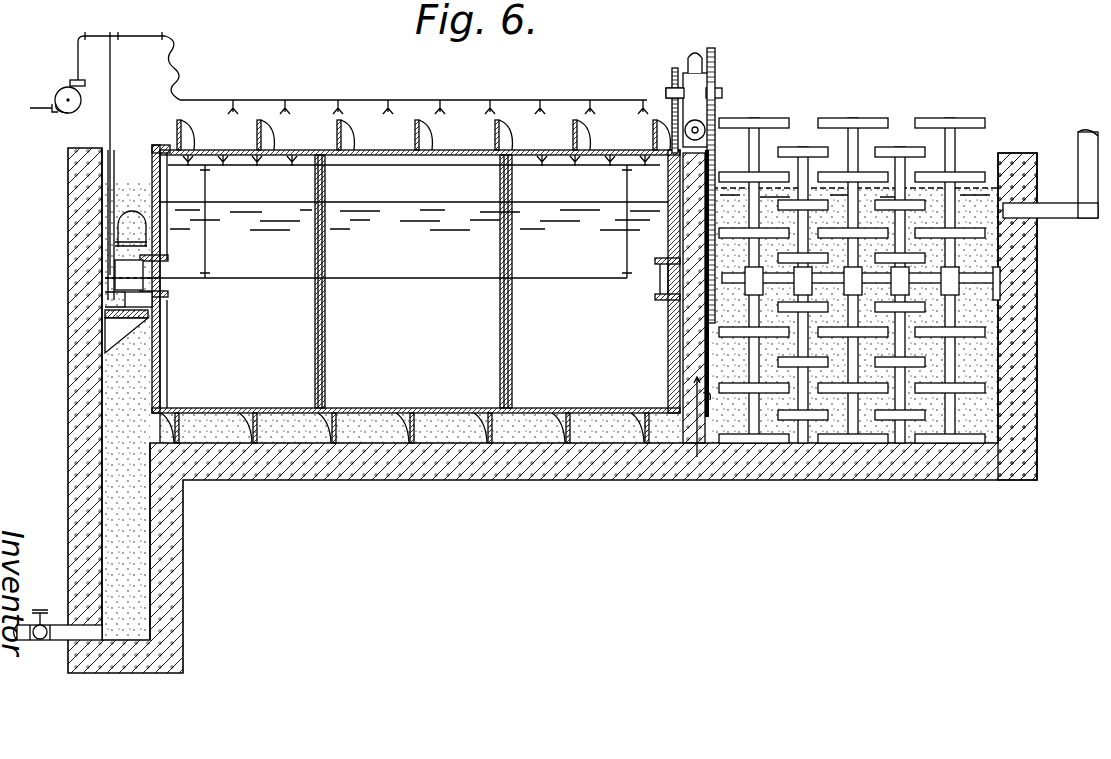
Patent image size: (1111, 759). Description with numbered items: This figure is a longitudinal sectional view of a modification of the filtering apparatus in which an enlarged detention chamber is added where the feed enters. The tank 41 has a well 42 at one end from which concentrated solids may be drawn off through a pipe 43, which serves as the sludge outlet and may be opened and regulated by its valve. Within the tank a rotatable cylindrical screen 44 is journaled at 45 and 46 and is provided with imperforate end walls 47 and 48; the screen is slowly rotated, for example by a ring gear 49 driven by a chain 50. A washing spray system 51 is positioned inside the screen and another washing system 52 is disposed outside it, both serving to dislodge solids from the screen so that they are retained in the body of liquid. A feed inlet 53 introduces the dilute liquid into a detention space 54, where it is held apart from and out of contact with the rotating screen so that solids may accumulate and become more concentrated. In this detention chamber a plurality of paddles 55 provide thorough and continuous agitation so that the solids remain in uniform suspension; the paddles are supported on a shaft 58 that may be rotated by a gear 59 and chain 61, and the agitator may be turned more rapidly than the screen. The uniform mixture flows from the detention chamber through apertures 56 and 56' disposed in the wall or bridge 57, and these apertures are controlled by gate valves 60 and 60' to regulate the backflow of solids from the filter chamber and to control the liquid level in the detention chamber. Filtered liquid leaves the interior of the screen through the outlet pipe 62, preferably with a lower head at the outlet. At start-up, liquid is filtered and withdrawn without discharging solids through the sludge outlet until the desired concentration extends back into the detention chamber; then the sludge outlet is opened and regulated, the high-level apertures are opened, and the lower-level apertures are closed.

The tank 41 is at (740, 462).
The well 42 is at (135, 570).
The pipe 43 is at (63, 642).
The rotatable cylindrical screen 44 is at (548, 430).
The journal 45 is at (150, 292).
The journal 46 is at (662, 282).
The imperforate end wall 47 is at (157, 342).
The imperforate end wall 48 is at (660, 185).
The ring gear 49 is at (672, 398).
The chain 50 is at (658, 122).
The washing spray system 51 is at (240, 168).
The washing system 52 is at (268, 100).
The feed inlet 53 is at (1086, 220).
The detention space 54 is at (1000, 430).
The paddles 55 is at (968, 405).
The aperture 56 is at (416, 356).
The aperture 56' is at (700, 452).
The wall or bridge 57 is at (700, 352).
The shaft 58 is at (985, 292).
The gear 59 is at (718, 312).
The gate valve 60 is at (706, 114).
The gate valve 60' is at (666, 283).
The chain 61 is at (855, 313).
The outlet pipe 62 is at (125, 262).